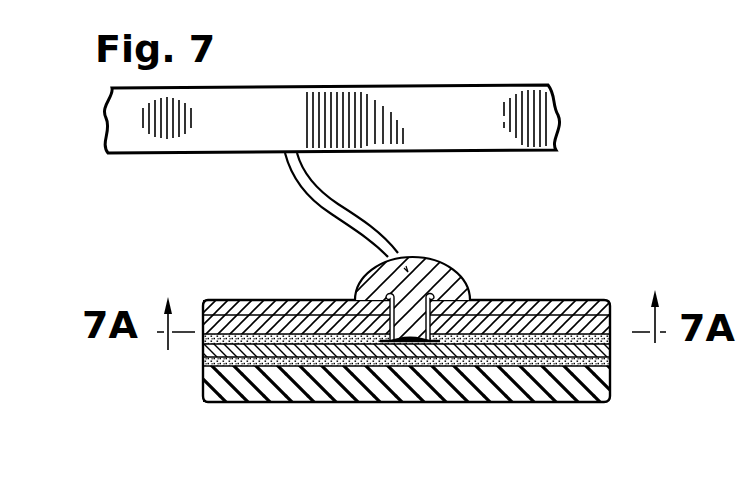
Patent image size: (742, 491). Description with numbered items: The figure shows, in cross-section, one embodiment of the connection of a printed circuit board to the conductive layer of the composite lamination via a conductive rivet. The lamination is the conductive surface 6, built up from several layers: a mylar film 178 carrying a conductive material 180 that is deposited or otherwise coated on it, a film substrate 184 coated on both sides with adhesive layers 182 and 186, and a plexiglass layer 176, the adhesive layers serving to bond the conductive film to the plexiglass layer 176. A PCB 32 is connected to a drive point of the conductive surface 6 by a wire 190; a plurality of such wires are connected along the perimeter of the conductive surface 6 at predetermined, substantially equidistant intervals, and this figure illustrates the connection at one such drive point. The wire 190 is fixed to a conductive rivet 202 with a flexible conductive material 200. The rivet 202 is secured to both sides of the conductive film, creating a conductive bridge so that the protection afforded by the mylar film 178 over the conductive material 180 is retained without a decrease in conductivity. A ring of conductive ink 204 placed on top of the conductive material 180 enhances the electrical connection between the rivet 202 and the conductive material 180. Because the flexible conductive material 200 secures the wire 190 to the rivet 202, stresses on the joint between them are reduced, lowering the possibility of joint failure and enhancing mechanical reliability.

The PCB 32 is at (530, 110).
The wire 190 is at (375, 232).
The flexible conductive material 200 is at (447, 261).
The conductive rivet 202 is at (457, 286).
The ring of conductive ink 204 is at (392, 346).
The mylar film 178 is at (219, 299).
The conductive material 180 is at (203, 322).
The adhesive layer 182 is at (205, 343).
The film substrate 184 is at (207, 353).
The adhesive layer 186 is at (207, 363).
The plexiglass layer 176 is at (220, 397).
The conductive surface 6 is at (386, 346).